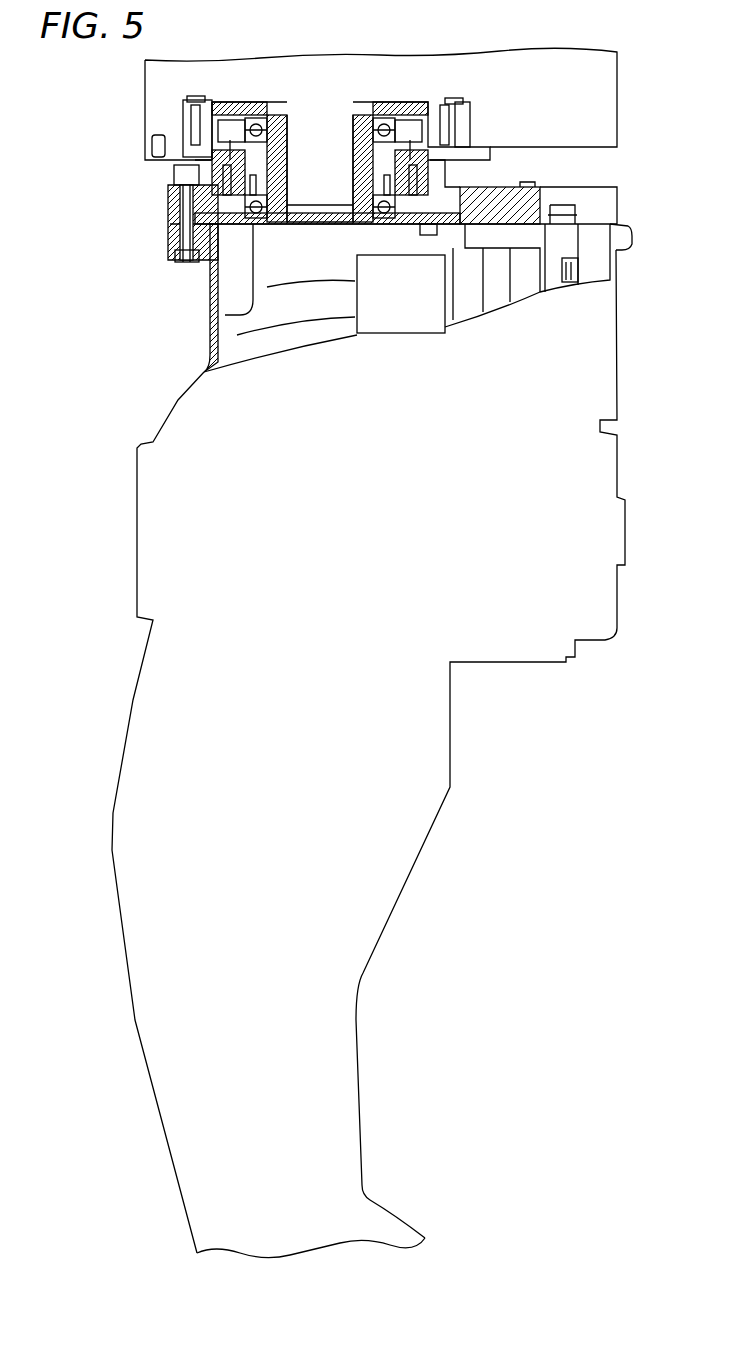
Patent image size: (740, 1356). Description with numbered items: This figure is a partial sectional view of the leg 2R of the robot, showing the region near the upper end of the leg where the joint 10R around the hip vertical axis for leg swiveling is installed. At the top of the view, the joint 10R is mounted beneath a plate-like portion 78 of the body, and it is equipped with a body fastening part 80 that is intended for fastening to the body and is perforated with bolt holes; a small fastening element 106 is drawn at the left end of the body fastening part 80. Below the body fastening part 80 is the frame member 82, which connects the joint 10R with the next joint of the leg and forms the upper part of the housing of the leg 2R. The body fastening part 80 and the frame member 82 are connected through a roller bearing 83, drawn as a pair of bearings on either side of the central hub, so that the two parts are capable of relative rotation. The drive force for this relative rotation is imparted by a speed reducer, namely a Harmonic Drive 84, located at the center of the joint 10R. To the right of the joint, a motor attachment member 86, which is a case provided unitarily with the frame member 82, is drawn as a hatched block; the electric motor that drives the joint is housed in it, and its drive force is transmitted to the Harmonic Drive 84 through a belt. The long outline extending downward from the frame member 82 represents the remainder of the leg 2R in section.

The leg 2R is at (145, 400).
The joint 10R is at (342, 148).
The plate 78 is at (619, 101).
The body fastening part 80 is at (185, 120).
The frame member 82 is at (205, 362).
The roller bearing 83 is at (217, 136).
The Harmonic Drive 84 is at (348, 158).
The motor attachment member 86 is at (618, 212).
The pin 106 is at (152, 140).